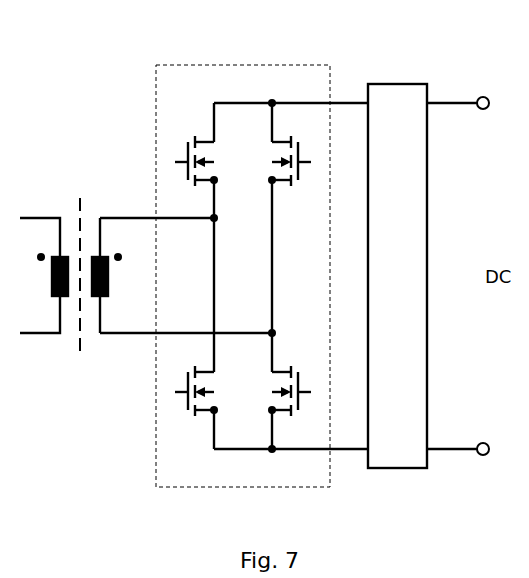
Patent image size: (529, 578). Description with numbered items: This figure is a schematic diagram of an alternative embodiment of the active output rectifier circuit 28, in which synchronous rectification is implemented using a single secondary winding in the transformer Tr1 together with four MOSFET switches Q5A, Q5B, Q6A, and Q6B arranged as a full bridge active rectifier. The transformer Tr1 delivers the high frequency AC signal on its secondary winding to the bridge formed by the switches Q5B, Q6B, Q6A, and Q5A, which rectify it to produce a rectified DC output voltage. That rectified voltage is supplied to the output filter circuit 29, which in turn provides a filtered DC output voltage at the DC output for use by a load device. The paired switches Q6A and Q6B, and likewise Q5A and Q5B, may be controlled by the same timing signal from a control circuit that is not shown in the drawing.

The active output rectifier circuit 28 is at (136, 63).
The output filter circuit 29 is at (434, 77).
The transformer Tr1 is at (71, 264).
The MOSFET switch Q5B is at (188, 150).
The MOSFET switch Q6B is at (295, 150).
The MOSFET switch Q6A is at (188, 403).
The MOSFET switch Q5A is at (295, 403).